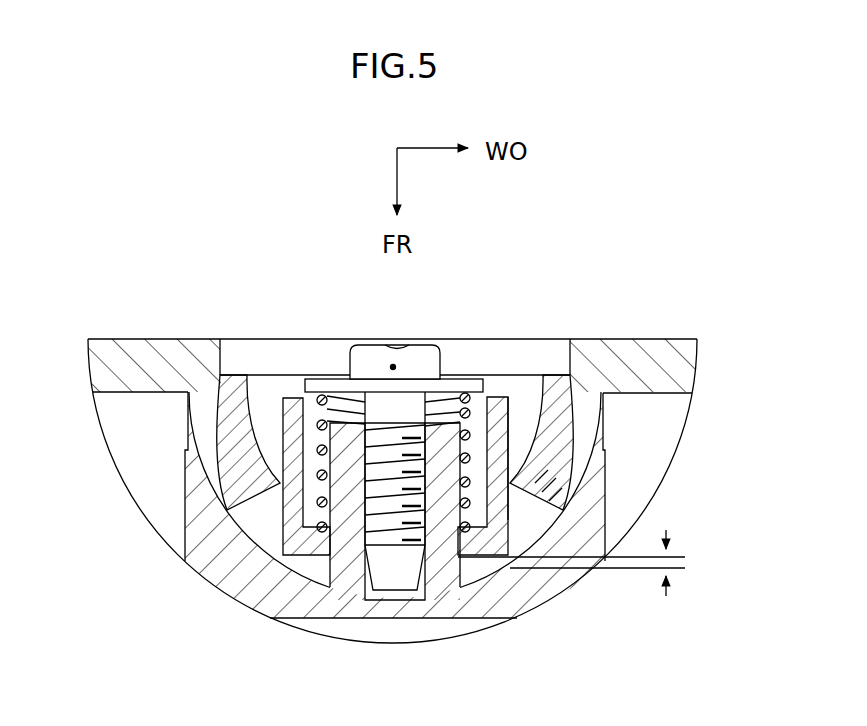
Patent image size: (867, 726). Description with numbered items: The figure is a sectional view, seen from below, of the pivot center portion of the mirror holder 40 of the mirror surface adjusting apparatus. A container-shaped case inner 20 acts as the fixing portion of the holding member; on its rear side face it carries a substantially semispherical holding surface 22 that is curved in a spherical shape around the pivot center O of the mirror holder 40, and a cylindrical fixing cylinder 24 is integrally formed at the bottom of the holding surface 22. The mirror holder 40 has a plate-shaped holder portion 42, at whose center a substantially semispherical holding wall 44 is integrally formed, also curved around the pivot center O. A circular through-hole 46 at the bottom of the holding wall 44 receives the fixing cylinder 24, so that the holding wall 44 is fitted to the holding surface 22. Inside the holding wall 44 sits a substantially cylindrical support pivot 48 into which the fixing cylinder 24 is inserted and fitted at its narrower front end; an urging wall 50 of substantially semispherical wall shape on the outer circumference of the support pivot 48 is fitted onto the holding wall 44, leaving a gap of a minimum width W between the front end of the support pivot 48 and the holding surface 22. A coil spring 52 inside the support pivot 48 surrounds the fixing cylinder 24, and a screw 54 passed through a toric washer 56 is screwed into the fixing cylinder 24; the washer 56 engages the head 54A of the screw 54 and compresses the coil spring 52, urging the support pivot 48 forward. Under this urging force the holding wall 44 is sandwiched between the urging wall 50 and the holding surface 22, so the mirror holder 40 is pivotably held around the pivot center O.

The case inner 20 is at (178, 523).
The holding surface 22 is at (542, 524).
The fixing cylinder 24 is at (327, 570).
The mirror holder 40 is at (103, 330).
The holder portion 42 is at (667, 338).
The holding wall 44 is at (582, 430).
The through-hole 46 is at (546, 490).
The support pivot 48 is at (506, 395).
The urging wall 50 is at (572, 392).
The coil spring 52 is at (318, 425).
The screw 54 is at (393, 603).
The head 54A is at (352, 344).
The washer 56 is at (500, 383).
The pivot center O is at (395, 365).
The minimum width W is at (681, 562).